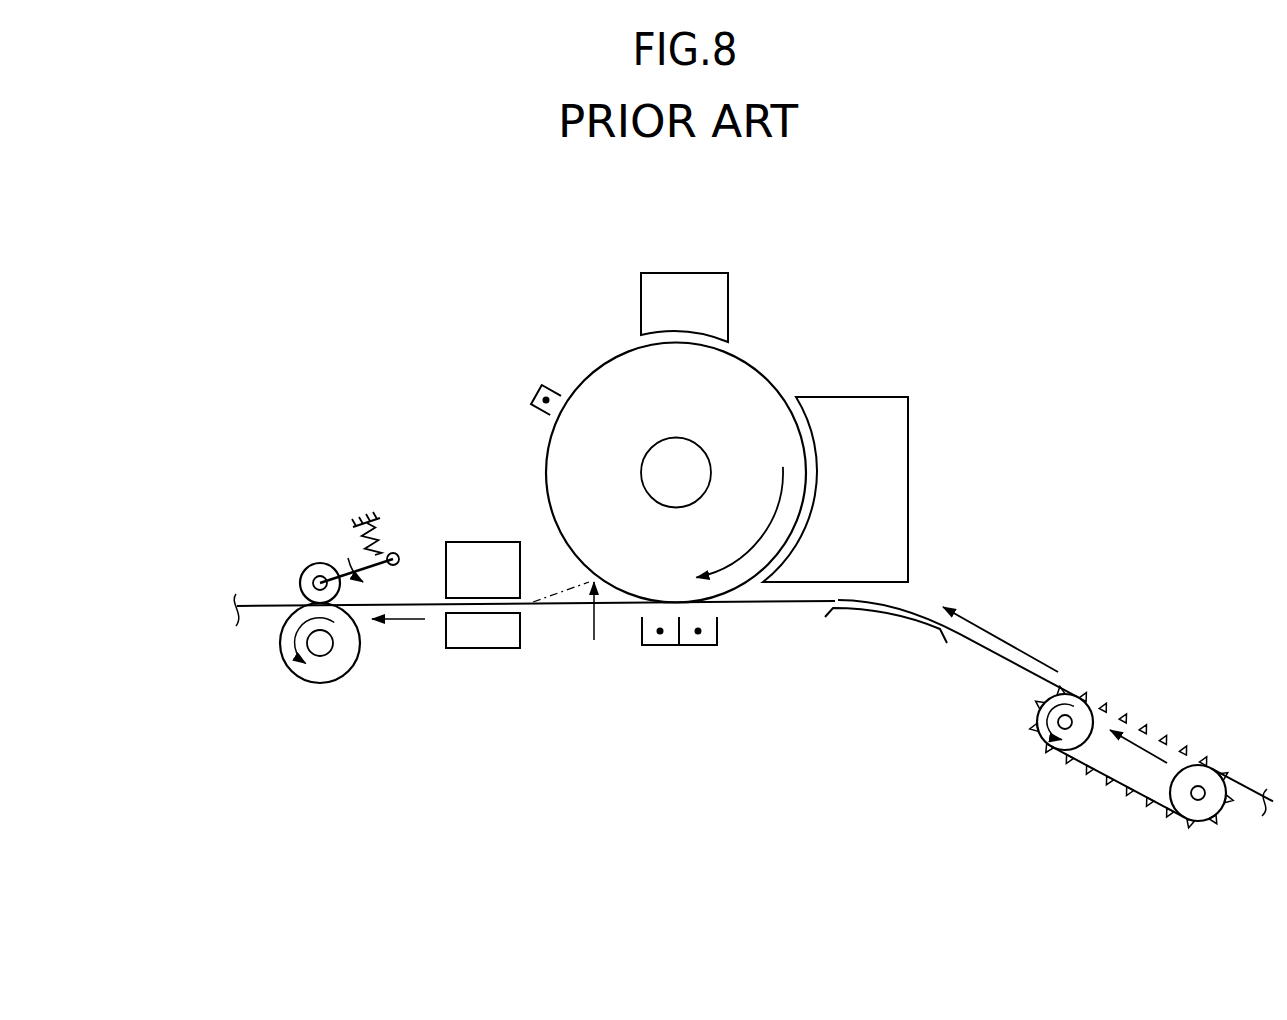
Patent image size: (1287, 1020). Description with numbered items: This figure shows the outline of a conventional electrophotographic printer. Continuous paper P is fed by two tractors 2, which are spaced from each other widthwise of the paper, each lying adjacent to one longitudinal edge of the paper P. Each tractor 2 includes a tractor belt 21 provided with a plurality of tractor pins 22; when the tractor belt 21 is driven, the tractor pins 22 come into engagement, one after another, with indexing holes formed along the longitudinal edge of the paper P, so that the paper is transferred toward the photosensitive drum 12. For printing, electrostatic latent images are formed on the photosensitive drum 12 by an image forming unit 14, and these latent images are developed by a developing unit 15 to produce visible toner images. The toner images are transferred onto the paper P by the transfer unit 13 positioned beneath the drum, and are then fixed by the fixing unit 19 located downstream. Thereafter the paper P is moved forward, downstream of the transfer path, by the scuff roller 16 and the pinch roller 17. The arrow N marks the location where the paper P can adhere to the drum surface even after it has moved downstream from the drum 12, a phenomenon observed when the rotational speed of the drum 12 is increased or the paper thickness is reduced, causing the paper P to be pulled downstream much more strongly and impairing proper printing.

The tractor 2 is at (1155, 772).
The photosensitive drum 12 is at (760, 373).
The transfer unit 13 is at (688, 645).
The image forming unit 14 is at (697, 272).
The developing unit 15 is at (910, 490).
The scuff roller 16 is at (320, 685).
The pinch roller 17 is at (312, 563).
The fixing unit 19 is at (484, 658).
The tractor belt 21 is at (1153, 810).
The tractor pin 22 is at (1183, 742).
The arrow N is at (579, 613).
The paper P is at (778, 610).